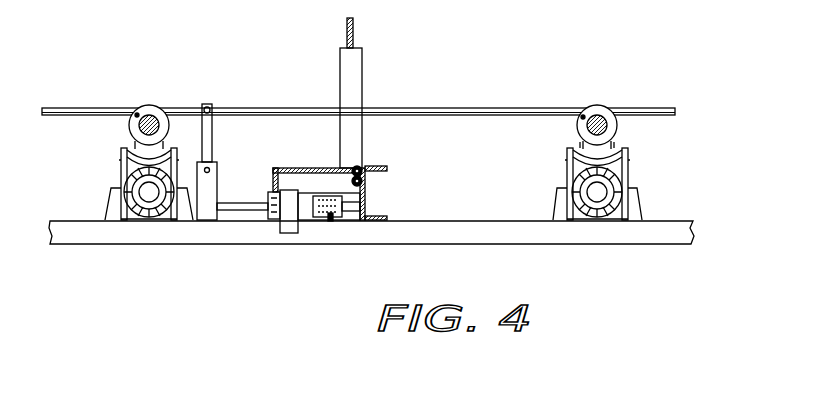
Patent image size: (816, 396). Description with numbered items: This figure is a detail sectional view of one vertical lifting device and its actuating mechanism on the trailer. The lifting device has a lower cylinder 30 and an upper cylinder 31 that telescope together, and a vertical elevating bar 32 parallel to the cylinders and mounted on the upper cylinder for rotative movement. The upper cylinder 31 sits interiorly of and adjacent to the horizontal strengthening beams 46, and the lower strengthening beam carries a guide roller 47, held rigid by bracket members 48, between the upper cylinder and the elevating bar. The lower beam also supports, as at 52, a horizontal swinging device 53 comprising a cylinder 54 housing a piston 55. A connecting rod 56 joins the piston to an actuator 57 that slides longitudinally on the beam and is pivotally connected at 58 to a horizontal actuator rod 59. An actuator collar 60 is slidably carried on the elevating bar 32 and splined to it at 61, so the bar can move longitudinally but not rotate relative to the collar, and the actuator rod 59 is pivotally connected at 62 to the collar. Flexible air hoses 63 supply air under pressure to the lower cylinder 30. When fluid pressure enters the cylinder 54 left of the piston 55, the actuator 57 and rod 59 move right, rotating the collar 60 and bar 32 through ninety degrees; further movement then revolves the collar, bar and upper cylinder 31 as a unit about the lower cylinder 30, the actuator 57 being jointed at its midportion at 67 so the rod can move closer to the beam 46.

The lower cylinder 30 is at (137, 219).
The upper cylinder 31 is at (162, 219).
The vertical elevating bar 32 is at (157, 107).
The strengthening beam 46 is at (472, 230).
The guide roller 47 is at (126, 152).
The bracket member 48 is at (128, 185).
The support 52 is at (366, 221).
The swinging device 53 is at (290, 218).
The cylinder 54 is at (363, 206).
The piston 55 is at (330, 221).
The connecting rod 56 is at (265, 188).
The actuator 57 is at (215, 191).
The pivotal connection 58 is at (207, 104).
The actuator rod 59 is at (298, 84).
The actuator collar 60 is at (611, 116).
The spline 61 is at (158, 127).
The pivotal connection 62 is at (137, 113).
The flexible air hose 63 is at (356, 33).
The joint 67 is at (211, 170).